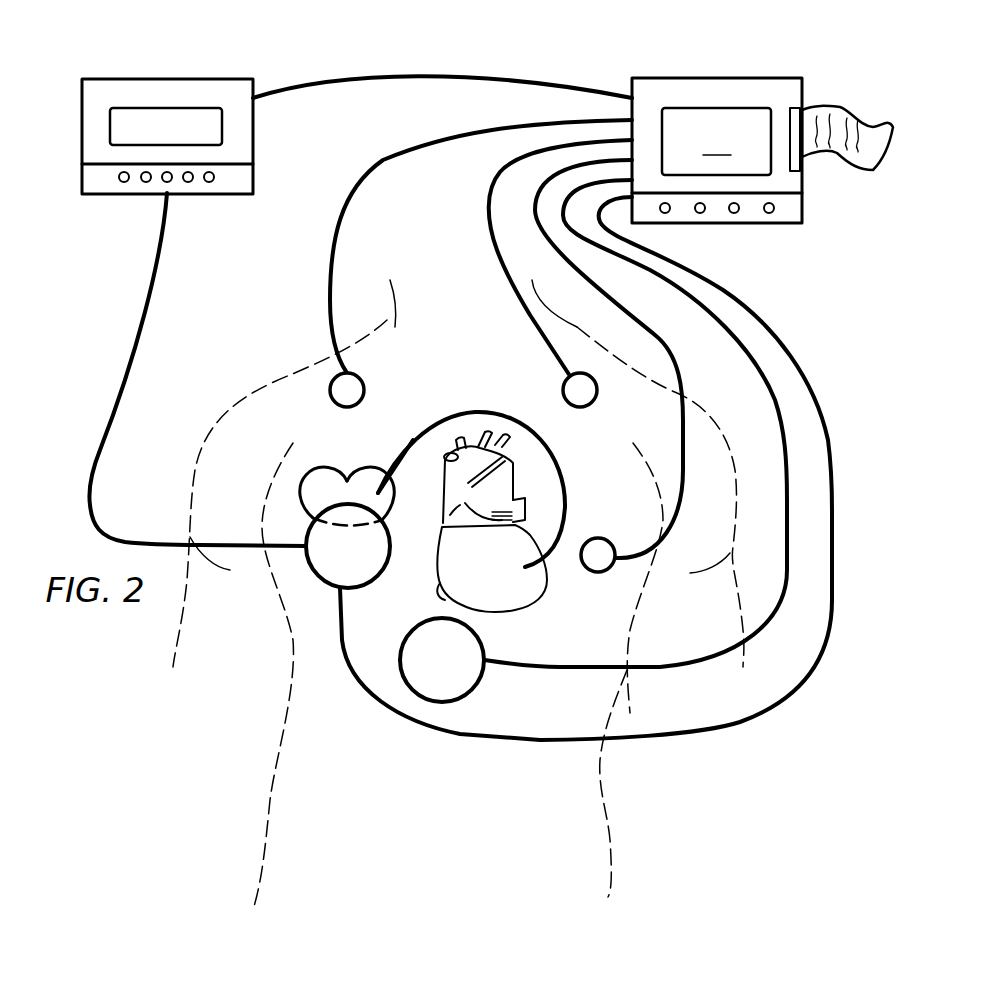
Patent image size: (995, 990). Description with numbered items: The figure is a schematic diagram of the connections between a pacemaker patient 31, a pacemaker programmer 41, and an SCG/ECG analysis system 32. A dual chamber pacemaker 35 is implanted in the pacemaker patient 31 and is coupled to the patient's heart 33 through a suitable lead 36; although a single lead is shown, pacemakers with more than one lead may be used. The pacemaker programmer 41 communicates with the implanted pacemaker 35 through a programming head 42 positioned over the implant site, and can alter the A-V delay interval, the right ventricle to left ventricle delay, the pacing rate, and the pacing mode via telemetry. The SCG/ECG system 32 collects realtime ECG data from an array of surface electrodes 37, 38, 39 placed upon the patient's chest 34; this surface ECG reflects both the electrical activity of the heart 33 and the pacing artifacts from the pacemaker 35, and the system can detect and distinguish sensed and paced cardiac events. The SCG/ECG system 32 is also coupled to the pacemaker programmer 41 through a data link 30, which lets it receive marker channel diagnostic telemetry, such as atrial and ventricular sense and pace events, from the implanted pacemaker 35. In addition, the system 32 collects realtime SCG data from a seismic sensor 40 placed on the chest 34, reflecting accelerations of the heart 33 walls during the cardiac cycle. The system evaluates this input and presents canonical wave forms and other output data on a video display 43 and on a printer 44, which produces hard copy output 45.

The data link 30 is at (367, 76).
The pacemaker patient 31 is at (302, 368).
The SCG/ECG analysis system 32 is at (692, 77).
The heart 33 is at (478, 578).
The chest 34 is at (455, 304).
The dual chamber pacemaker 35 is at (325, 468).
The lead 36 is at (478, 410).
The surface electrode 37 is at (364, 382).
The surface electrode 38 is at (597, 396).
The surface electrode 39 is at (604, 539).
The seismic sensor 40 is at (484, 672).
The pacemaker programmer 41 is at (142, 78).
The programming head 42 is at (354, 590).
The video display 43 is at (716, 141).
The printer 44 is at (795, 108).
The hard copy output 45 is at (840, 107).